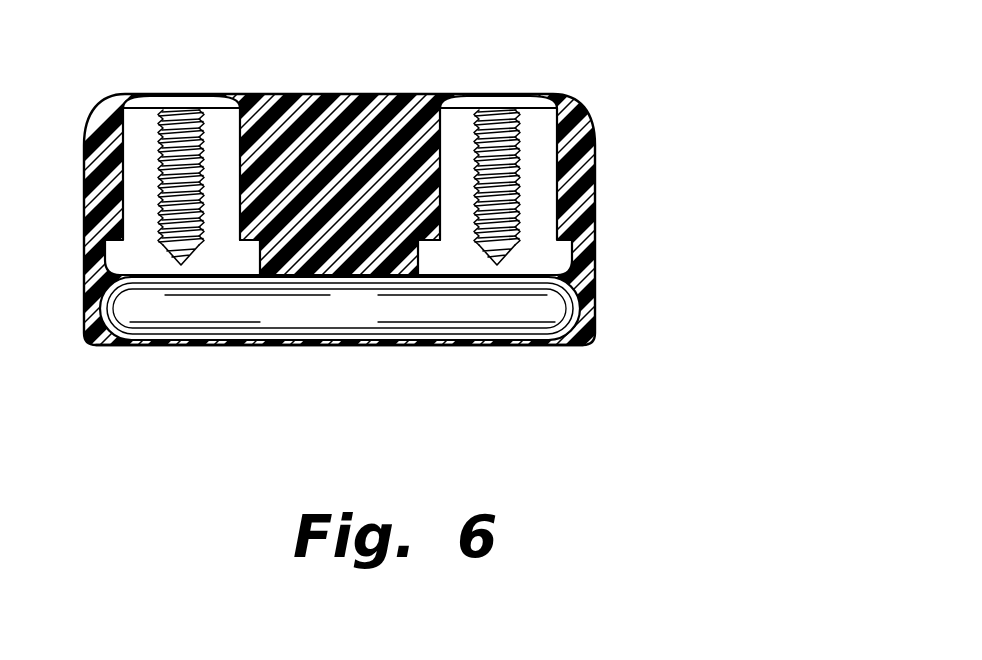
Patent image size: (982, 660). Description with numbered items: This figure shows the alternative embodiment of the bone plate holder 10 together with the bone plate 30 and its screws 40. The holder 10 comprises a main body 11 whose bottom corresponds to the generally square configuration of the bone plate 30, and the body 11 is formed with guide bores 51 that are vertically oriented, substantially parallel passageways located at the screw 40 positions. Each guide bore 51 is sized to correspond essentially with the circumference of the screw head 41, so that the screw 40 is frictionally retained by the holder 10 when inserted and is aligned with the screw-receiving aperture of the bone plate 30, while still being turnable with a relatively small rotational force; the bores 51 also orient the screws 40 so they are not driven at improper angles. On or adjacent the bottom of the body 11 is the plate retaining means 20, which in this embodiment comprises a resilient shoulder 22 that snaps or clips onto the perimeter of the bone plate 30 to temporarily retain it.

The bone plate holder 10 is at (491, 330).
The main body 11 is at (597, 230).
The plate retainer means 20 is at (425, 367).
The resilient shoulder 22 is at (578, 337).
The bone plate 30 is at (477, 310).
The screw 40 is at (520, 157).
The screw head 41 is at (493, 93).
The guide bore 51 is at (243, 224).